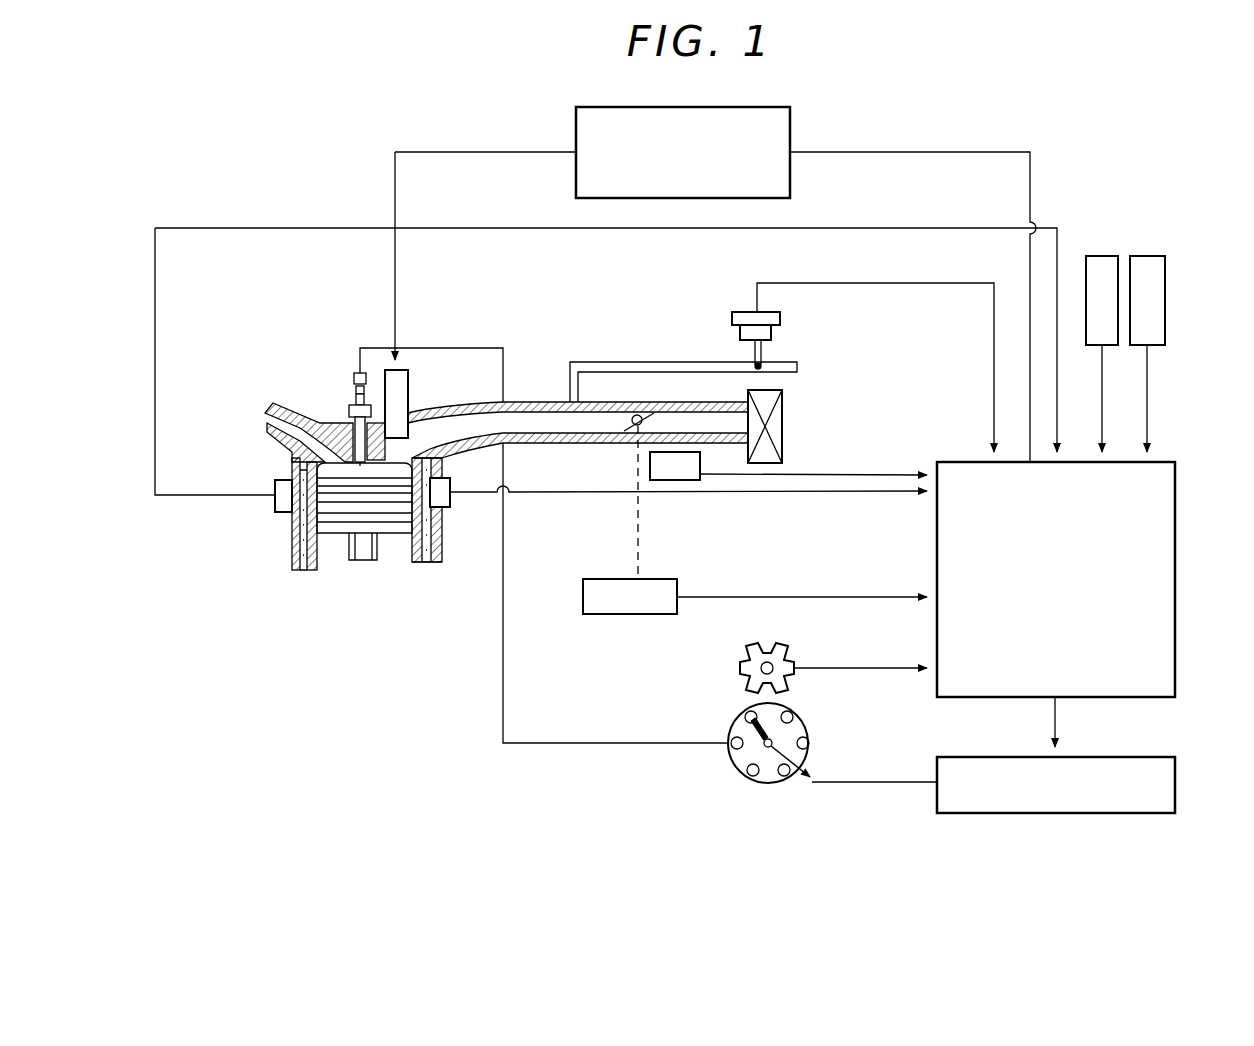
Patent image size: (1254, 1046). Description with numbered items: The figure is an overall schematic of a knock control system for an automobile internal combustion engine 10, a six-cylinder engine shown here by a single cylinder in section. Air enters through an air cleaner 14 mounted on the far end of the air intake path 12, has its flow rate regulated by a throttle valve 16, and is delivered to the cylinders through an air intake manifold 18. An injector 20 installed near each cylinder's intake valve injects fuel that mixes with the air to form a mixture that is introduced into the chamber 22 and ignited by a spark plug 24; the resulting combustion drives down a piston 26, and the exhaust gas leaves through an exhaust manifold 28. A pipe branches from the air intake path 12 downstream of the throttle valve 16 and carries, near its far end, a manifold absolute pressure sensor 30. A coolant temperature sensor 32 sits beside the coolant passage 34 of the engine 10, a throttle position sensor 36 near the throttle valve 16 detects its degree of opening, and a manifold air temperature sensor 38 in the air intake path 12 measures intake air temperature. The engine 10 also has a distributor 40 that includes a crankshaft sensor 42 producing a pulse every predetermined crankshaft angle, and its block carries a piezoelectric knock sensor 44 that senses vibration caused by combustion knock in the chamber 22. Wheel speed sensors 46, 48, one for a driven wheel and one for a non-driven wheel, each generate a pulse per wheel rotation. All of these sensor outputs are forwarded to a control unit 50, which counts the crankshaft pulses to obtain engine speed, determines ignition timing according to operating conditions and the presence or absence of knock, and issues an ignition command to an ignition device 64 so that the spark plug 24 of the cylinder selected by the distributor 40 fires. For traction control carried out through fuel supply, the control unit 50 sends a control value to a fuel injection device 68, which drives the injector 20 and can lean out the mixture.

The internal combustion engine 10 is at (282, 468).
The air intake path 12 is at (680, 405).
The air cleaner 14 is at (785, 443).
The throttle valve 16 is at (648, 433).
The air intake manifold 18 is at (504, 392).
The injector 20 is at (408, 372).
The combustion chamber 22 is at (360, 470).
The spark plug 24 is at (355, 380).
The piston 26 is at (395, 563).
The exhaust manifold 28 is at (278, 403).
The manifold absolute pressure sensor 30 is at (738, 312).
The coolant temperature sensor 32 is at (452, 503).
The coolant passage 34 is at (432, 565).
The throttle position sensor 36 is at (598, 583).
The manifold air temperature sensor 38 is at (695, 480).
The distributor 40 is at (735, 765).
The crankshaft sensor 42 is at (740, 668).
The piezoelectric knock sensor 44 is at (282, 503).
The wheel speed sensor 46 is at (1101, 256).
The wheel speed sensor 48 is at (1150, 258).
The control unit 50 is at (1170, 462).
The ignition device 64 is at (1155, 757).
The fuel injection device 68 is at (790, 133).